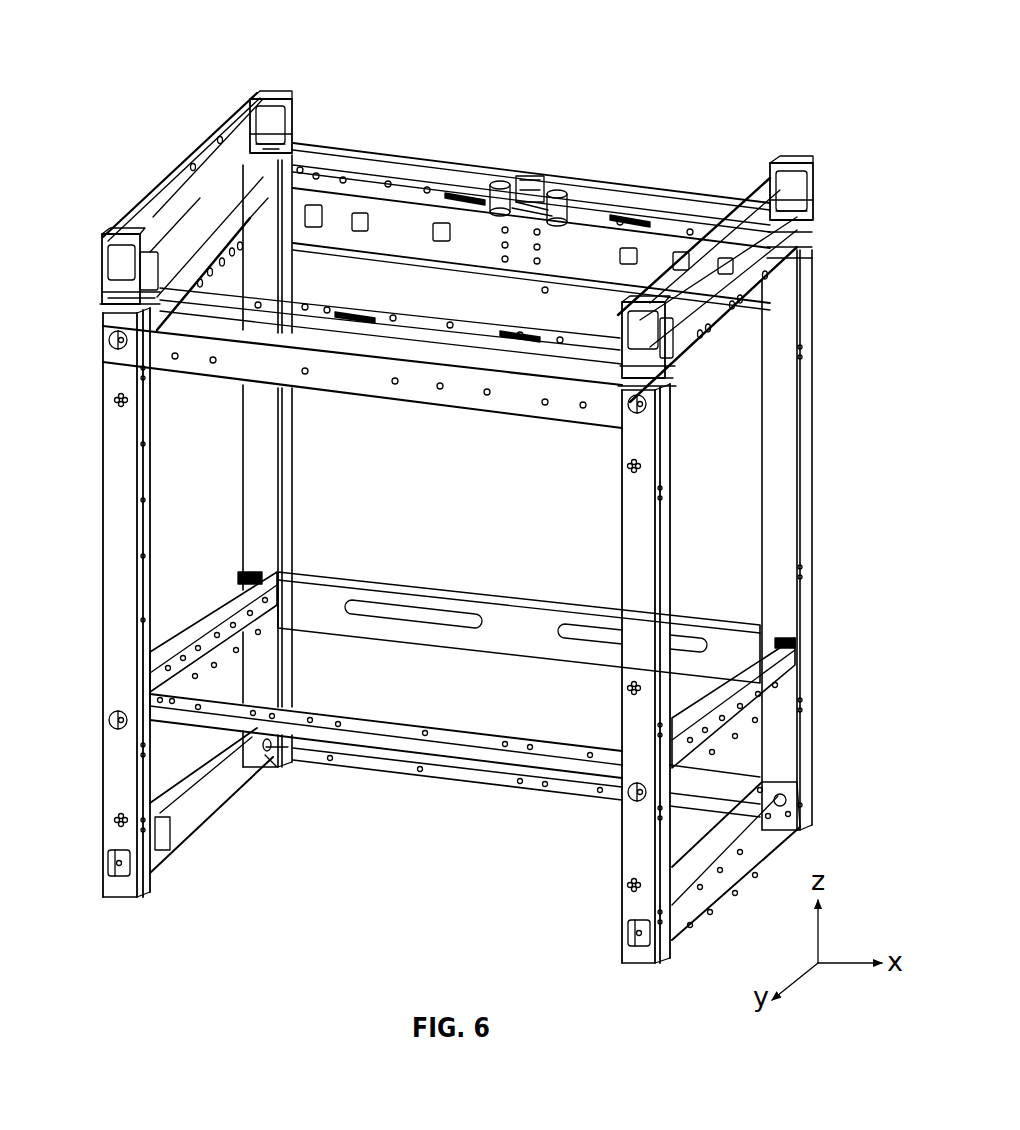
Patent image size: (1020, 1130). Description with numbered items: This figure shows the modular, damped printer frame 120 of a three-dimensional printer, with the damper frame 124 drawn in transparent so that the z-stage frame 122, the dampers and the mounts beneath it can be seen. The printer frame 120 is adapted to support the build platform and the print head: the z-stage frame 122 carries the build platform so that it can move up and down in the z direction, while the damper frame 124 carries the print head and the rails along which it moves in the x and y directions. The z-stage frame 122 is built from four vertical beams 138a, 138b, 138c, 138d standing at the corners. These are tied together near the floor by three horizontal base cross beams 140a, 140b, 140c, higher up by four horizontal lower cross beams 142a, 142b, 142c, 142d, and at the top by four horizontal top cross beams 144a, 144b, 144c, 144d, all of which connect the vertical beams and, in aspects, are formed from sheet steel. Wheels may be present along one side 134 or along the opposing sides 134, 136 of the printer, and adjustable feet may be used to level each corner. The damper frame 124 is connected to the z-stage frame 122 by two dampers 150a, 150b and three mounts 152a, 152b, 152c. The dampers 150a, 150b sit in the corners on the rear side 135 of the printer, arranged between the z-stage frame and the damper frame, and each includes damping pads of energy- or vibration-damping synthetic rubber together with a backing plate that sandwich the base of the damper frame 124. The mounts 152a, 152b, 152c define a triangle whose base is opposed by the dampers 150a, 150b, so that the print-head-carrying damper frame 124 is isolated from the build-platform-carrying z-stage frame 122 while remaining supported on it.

The printer frame 120 is at (160, 45).
The z-stage frame 122 is at (808, 813).
The damper frame 124 is at (822, 235).
The side 134 is at (668, 600).
The rear side 135 is at (830, 581).
The side 136 is at (98, 780).
The vertical beam 138a is at (110, 528).
The vertical beam 138b is at (652, 541).
The vertical beam 138c is at (262, 447).
The vertical beam 138d is at (776, 462).
The horizontal base cross beam 140a is at (190, 822).
The horizontal base cross beam 140b is at (518, 780).
The horizontal base cross beam 140c is at (718, 888).
The horizontal lower cross beam 142a is at (172, 655).
The horizontal lower cross beam 142b is at (388, 745).
The horizontal lower cross beam 142c is at (506, 655).
The horizontal lower cross beam 142d is at (800, 666).
The horizontal top cross beam 144a is at (152, 322).
The horizontal top cross beam 144b is at (372, 385).
The horizontal top cross beam 144c is at (583, 248).
The horizontal top cross beam 144d is at (704, 355).
The damper 150a is at (296, 140).
The damper 150b is at (768, 180).
The mount 152a is at (98, 300).
The mount 152b is at (532, 168).
The mount 152c is at (641, 383).